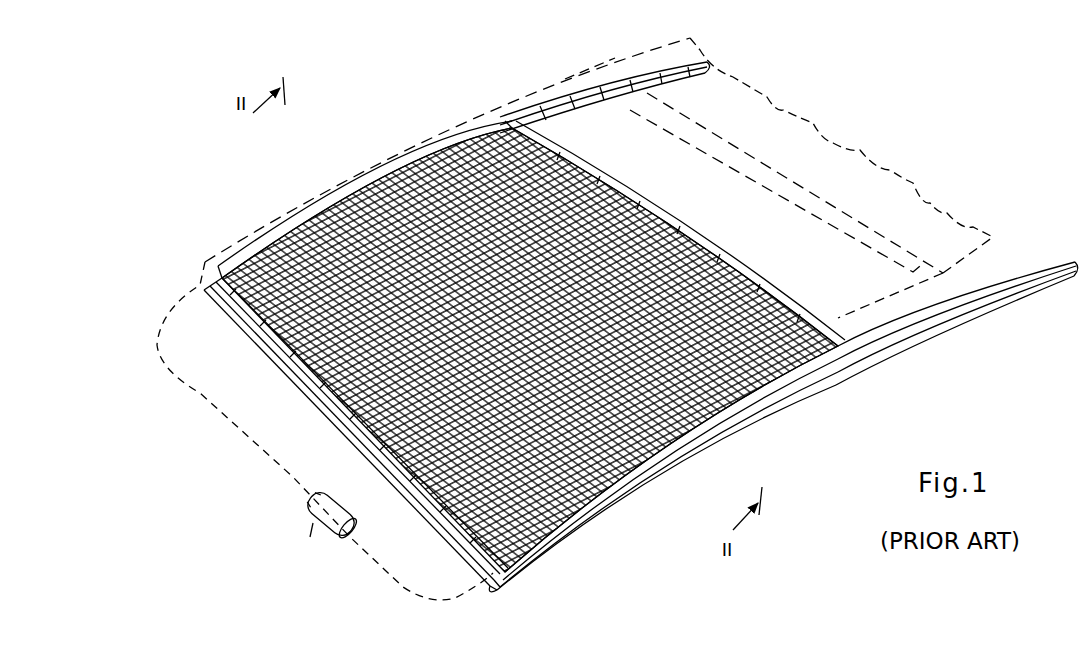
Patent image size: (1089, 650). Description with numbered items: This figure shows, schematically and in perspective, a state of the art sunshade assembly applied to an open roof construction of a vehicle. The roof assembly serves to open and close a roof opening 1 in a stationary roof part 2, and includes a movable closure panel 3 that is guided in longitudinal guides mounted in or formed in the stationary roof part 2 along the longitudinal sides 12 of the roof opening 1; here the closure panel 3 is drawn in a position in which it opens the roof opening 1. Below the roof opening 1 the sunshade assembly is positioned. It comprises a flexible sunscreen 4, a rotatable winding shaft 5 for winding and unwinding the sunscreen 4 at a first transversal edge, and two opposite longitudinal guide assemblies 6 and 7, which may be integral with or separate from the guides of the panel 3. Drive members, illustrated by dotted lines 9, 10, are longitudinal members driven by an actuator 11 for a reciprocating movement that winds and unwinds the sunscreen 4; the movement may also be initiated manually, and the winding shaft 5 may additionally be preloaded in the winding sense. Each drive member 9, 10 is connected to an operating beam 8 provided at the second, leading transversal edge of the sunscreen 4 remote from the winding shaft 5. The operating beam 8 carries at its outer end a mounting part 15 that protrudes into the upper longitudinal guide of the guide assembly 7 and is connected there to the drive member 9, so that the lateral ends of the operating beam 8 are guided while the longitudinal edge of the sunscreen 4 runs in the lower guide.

The roof opening 1 is at (580, 130).
The stationary roof part 2 is at (467, 99).
The movable closure panel 3 is at (814, 142).
The flexible sunscreen 4 is at (413, 235).
The rotatable winding shaft 5 is at (340, 440).
The longitudinal guide assembly 6 is at (340, 193).
The longitudinal guide assembly 7 is at (820, 373).
The operating beam 8 is at (680, 227).
The drive member 9 is at (660, 463).
The drive member 10 is at (193, 293).
The actuator 11 is at (325, 531).
The longitudinal side 12 is at (281, 205).
The mounting part 15 is at (437, 520).